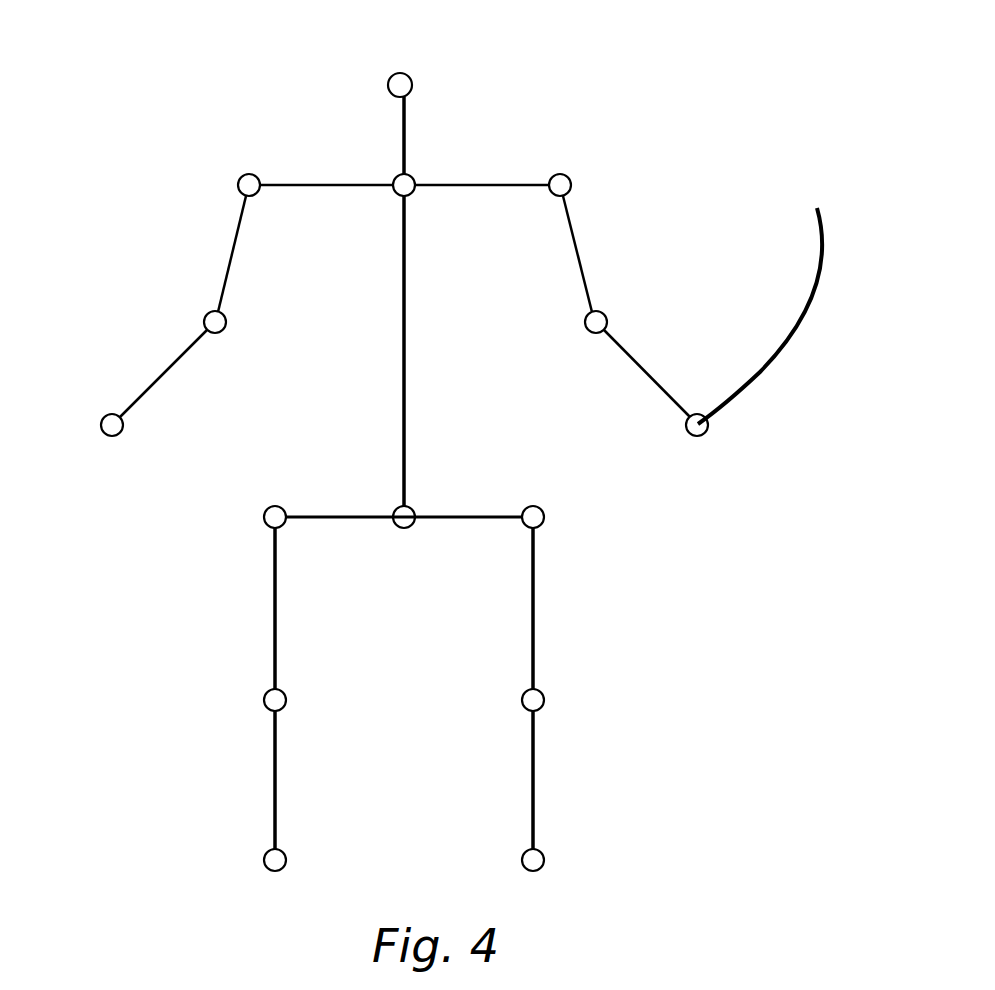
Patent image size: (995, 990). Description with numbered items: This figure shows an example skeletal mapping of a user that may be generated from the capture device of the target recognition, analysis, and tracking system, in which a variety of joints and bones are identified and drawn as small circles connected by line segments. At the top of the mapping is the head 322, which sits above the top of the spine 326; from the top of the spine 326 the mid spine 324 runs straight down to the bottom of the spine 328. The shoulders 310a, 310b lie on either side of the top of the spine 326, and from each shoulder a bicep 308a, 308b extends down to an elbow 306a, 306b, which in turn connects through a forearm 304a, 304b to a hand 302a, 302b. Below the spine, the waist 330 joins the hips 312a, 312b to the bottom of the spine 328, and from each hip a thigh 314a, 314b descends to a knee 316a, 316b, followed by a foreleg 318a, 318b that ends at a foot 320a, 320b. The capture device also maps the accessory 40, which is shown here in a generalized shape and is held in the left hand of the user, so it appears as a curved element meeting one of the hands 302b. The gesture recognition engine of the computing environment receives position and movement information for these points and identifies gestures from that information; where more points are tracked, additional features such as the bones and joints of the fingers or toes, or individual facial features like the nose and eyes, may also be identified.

The accessory 40 is at (818, 292).
The hand 302a is at (100, 420).
The hand 302b is at (708, 418).
The forearm 304a is at (165, 367).
The forearm 304b is at (640, 365).
The elbow 306a is at (205, 315).
The elbow 306b is at (605, 313).
The bicep 308a is at (235, 240).
The bicep 308b is at (577, 240).
The shoulder 310a is at (247, 173).
The shoulder 310b is at (565, 175).
The hip 312a is at (266, 510).
The hip 312b is at (544, 510).
The thigh 314a is at (272, 612).
The thigh 314b is at (537, 600).
The knee 316a is at (265, 695).
The knee 316b is at (544, 694).
The foreleg 318a is at (272, 785).
The foreleg 318b is at (537, 775).
The foot 320a is at (264, 858).
The foot 320b is at (544, 856).
The head 322 is at (403, 72).
The mid spine 324 is at (410, 335).
The top of the spine 326 is at (413, 177).
The bottom of the spine 328 is at (410, 508).
The waist 330 is at (464, 514).